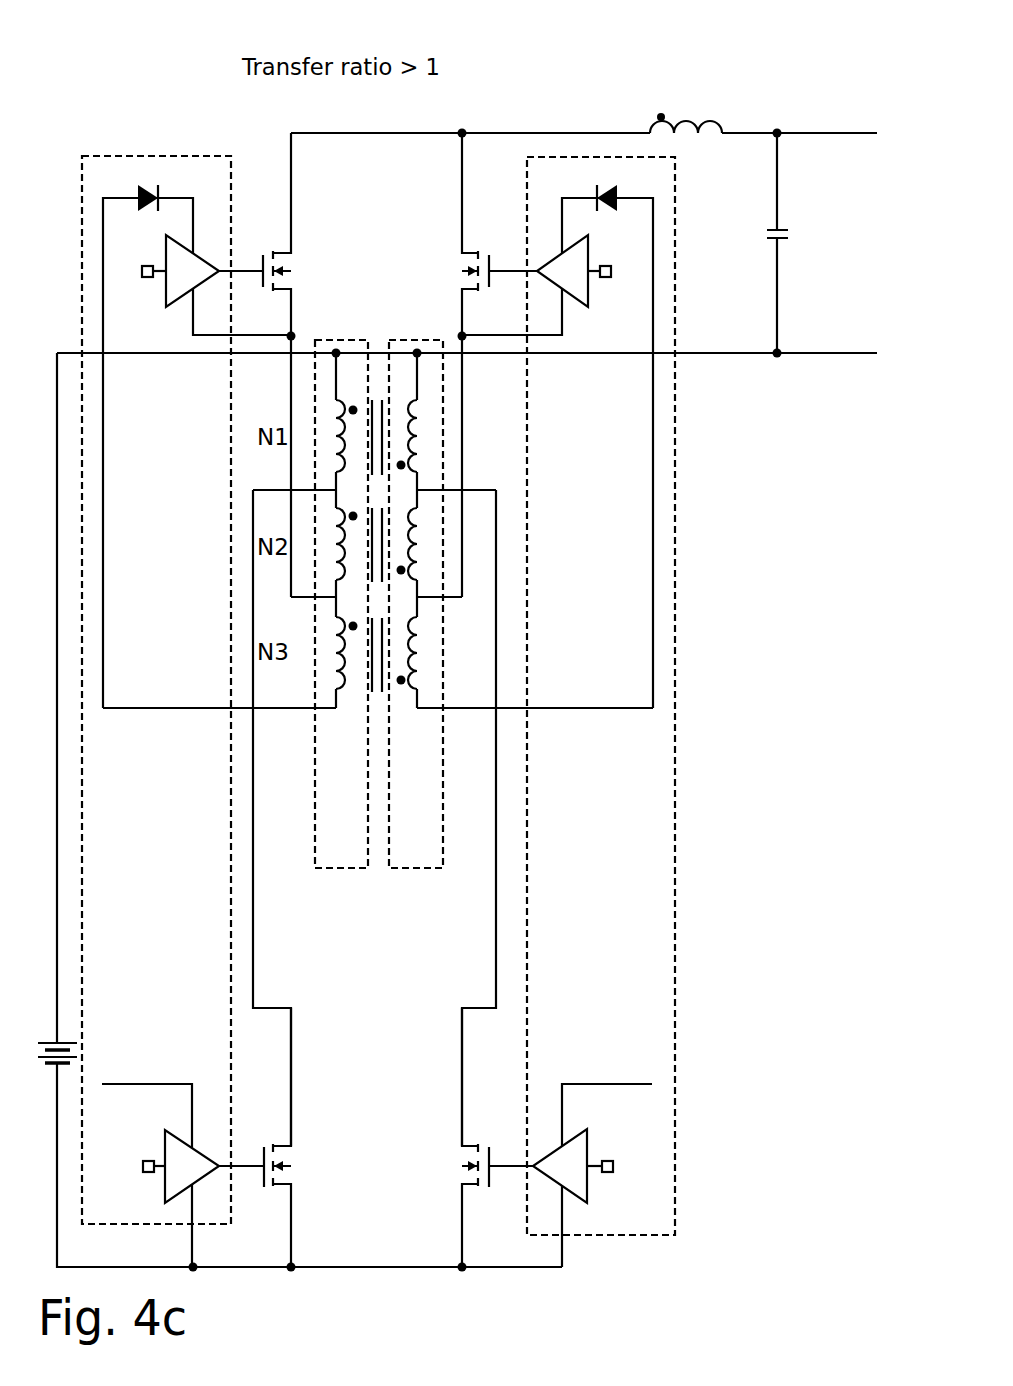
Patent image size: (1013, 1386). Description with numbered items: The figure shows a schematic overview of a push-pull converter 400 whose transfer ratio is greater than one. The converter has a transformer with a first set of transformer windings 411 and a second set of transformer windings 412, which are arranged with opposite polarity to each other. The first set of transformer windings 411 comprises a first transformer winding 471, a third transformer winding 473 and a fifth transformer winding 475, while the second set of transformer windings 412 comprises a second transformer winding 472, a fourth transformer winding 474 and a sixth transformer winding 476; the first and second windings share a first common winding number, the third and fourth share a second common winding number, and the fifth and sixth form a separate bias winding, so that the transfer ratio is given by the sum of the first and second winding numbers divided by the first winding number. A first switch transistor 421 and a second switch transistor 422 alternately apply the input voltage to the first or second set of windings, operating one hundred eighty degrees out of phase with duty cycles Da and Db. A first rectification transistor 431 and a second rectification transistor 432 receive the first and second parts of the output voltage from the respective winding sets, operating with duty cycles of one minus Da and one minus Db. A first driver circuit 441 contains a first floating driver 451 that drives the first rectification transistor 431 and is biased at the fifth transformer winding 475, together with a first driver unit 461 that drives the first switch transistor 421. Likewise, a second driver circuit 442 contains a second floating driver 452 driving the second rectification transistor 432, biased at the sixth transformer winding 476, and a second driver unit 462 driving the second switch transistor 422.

The push-pull converter 400 is at (566, 86).
The first set of transformer windings 411 is at (325, 866).
The second set of transformer windings 412 is at (399, 866).
The first switch transistor 421 is at (303, 1160).
The second switch transistor 422 is at (452, 1160).
The first rectification transistor 431 is at (298, 255).
The second rectification transistor 432 is at (455, 267).
The first driver circuit 441 is at (163, 153).
The second driver circuit 442 is at (678, 945).
The first floating driver 451 is at (188, 290).
The second floating driver 452 is at (568, 273).
The first driver unit 461 is at (187, 1175).
The second driver unit 462 is at (546, 1160).
The first transformer winding 471 is at (337, 398).
The second transformer winding 472 is at (413, 398).
The third transformer winding 473 is at (336, 568).
The fourth transformer winding 474 is at (417, 568).
The fifth transformer winding 475 is at (336, 690).
The sixth transformer winding 476 is at (417, 655).